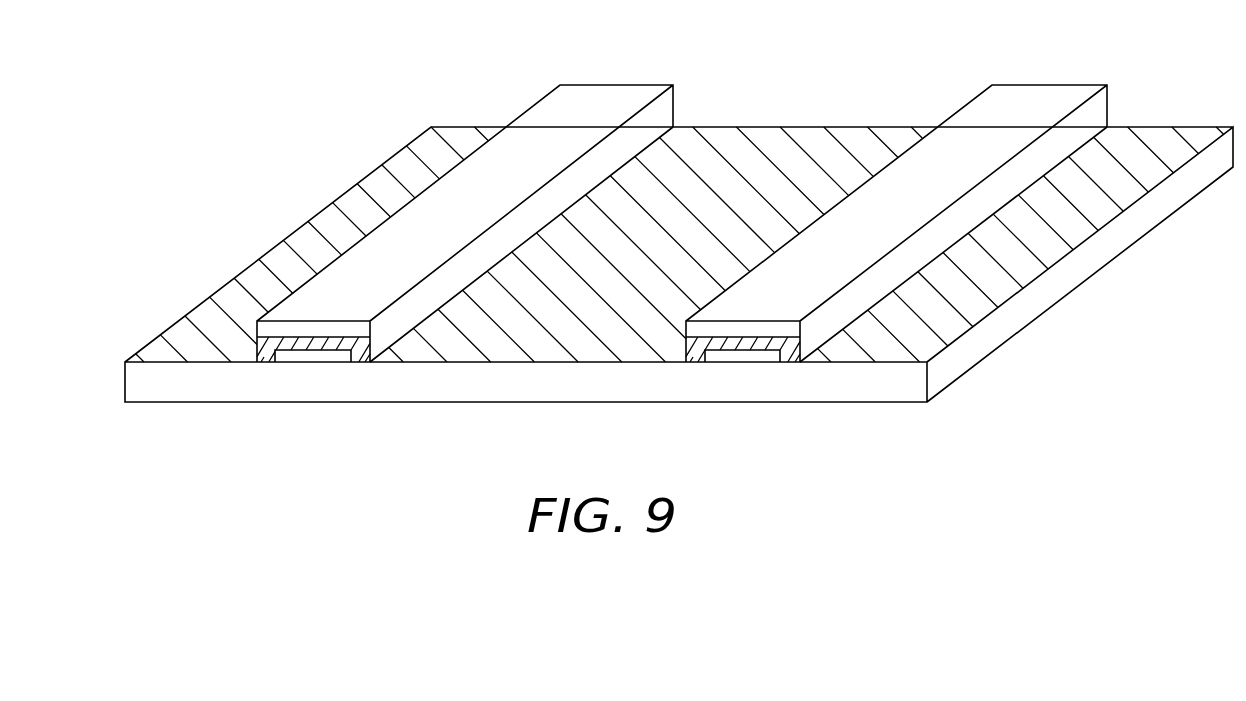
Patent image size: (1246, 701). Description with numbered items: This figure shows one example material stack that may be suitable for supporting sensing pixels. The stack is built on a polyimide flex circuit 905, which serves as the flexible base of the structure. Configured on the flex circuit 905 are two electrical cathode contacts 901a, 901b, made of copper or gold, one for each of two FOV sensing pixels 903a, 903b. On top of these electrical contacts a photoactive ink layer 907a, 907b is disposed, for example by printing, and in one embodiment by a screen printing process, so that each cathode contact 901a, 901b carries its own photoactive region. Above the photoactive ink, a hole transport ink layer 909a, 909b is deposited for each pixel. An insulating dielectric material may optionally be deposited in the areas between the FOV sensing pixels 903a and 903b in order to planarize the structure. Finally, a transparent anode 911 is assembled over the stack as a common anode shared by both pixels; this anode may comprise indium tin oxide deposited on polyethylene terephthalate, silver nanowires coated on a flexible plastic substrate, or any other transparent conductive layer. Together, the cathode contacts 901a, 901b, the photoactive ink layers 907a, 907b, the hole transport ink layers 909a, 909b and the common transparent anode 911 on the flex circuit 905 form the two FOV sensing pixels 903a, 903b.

The electrical cathode contact 901a is at (323, 355).
The electrical cathode contact 901b is at (753, 355).
The FOV sensing pixel 903a is at (453, 252).
The FOV sensing pixel 903b is at (875, 252).
The polyimide flex circuit 905 is at (943, 368).
The photoactive ink layer 907a is at (258, 348).
The photoactive ink layer 907b is at (687, 348).
The hole transport ink layer 909a is at (273, 307).
The hole transport ink layer 909b is at (722, 308).
The transparent anode 911 is at (1168, 155).